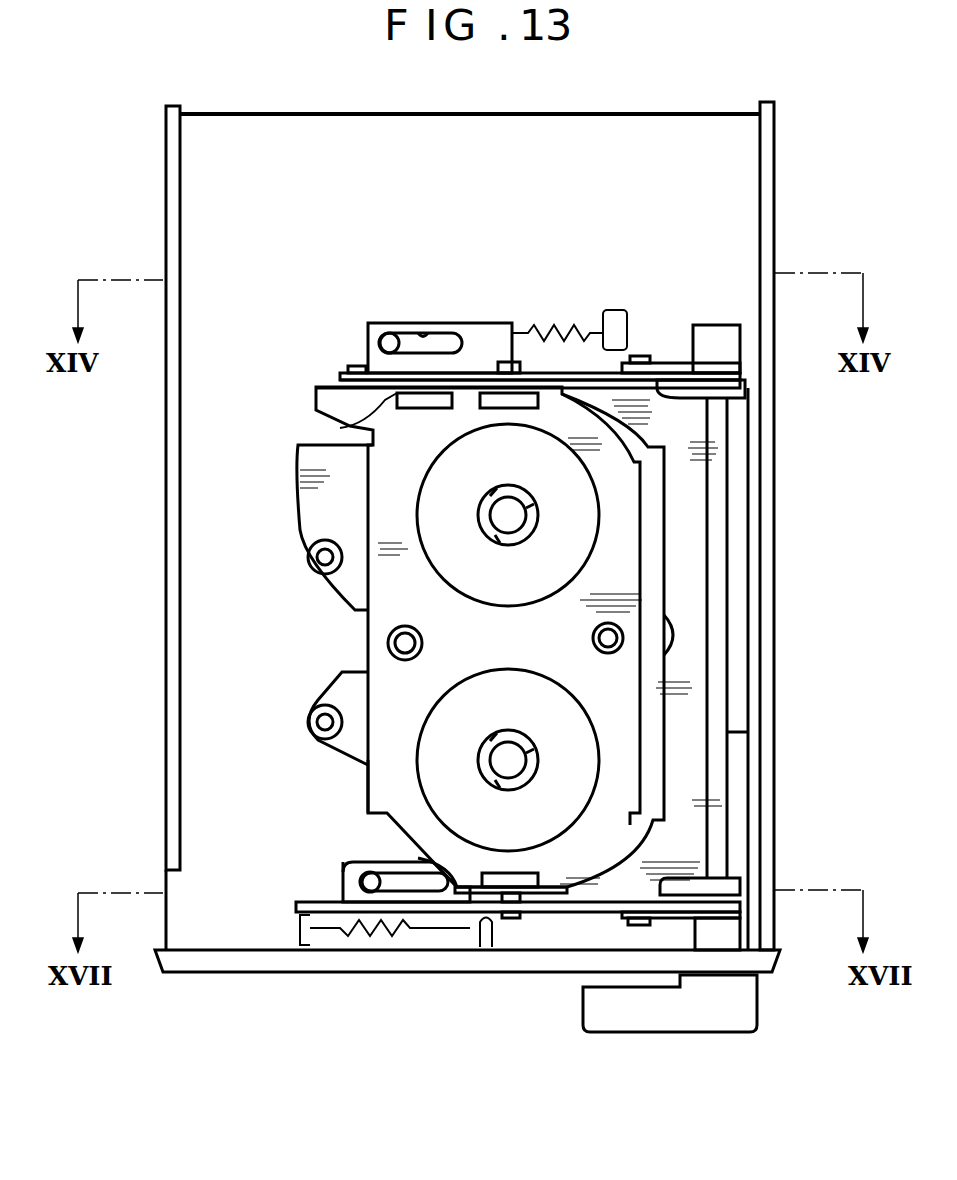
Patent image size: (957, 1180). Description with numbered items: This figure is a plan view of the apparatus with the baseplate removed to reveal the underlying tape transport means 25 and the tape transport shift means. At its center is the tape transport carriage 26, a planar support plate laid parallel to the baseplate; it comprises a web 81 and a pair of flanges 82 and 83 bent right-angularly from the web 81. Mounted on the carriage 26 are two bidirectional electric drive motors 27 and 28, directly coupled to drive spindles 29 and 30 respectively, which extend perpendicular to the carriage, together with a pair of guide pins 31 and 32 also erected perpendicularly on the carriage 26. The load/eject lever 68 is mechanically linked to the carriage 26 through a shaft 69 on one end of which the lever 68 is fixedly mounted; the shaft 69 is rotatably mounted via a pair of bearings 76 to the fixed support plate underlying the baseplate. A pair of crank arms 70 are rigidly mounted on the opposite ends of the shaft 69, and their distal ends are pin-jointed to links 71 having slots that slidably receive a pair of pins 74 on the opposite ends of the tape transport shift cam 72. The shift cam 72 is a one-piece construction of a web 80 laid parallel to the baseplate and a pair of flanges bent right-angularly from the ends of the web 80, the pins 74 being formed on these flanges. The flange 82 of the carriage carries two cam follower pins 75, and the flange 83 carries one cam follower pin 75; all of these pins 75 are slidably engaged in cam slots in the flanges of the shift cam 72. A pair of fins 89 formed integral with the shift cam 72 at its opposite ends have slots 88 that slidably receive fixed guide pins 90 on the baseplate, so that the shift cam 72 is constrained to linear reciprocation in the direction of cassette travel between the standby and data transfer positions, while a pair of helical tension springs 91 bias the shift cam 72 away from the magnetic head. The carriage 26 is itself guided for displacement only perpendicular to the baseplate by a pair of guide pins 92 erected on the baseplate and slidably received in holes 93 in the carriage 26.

The chassis upper portion 25 is at (362, 638).
The tape transport carriage 26 is at (358, 788).
The bidirectional electric drive motor 27 is at (585, 485).
The bidirectional electric drive motor 28 is at (585, 742).
The drive spindle 29 is at (525, 516).
The drive spindle 30 is at (525, 762).
The guide pin 31 is at (320, 557).
The guide pin 32 is at (320, 722).
The load/eject lever 68 is at (750, 1005).
The shaft 69 is at (718, 708).
The crank arm 70 is at (718, 348).
The link 71 is at (675, 363).
The tape transport shift cam 72 is at (340, 365).
The pin 74 is at (640, 356).
The cam follower pin 75 is at (515, 362).
The bearing 76 is at (720, 384).
The web 80 is at (697, 637).
The web 81 is at (378, 770).
The flange 82 is at (368, 445).
The flange 83 is at (457, 880).
The slot 88 is at (425, 333).
The fin 89 is at (470, 340).
The fixed guide pin 90 is at (380, 333).
The helical tension spring 91 is at (590, 333).
The guide pin 92 is at (395, 646).
The hole 93 is at (403, 650).